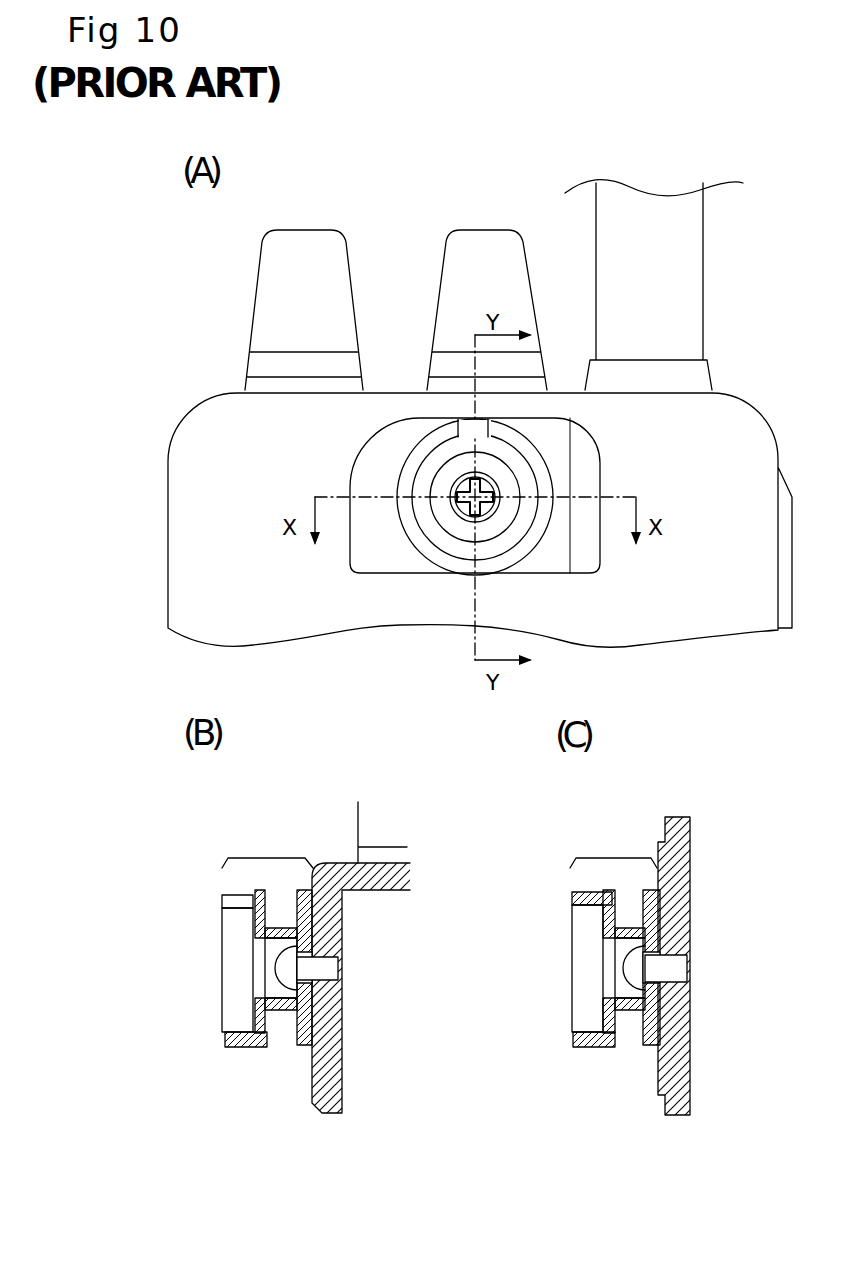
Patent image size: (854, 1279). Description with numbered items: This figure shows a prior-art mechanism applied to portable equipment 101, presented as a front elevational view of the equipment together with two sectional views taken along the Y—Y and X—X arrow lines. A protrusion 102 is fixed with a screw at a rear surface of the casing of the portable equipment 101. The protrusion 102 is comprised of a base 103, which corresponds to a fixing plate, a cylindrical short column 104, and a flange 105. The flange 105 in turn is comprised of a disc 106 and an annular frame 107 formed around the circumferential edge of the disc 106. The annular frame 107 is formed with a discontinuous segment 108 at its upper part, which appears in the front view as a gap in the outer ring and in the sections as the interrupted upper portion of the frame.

The portable equipment 101 is at (720, 442).
The protrusion 102 is at (573, 470).
The base 103 is at (300, 1020).
The cylindrical short column 104 is at (455, 527).
The flange 105 is at (527, 557).
The disc 106 is at (433, 462).
The annular frame 107 is at (405, 480).
The discontinuous segment 108 is at (467, 425).